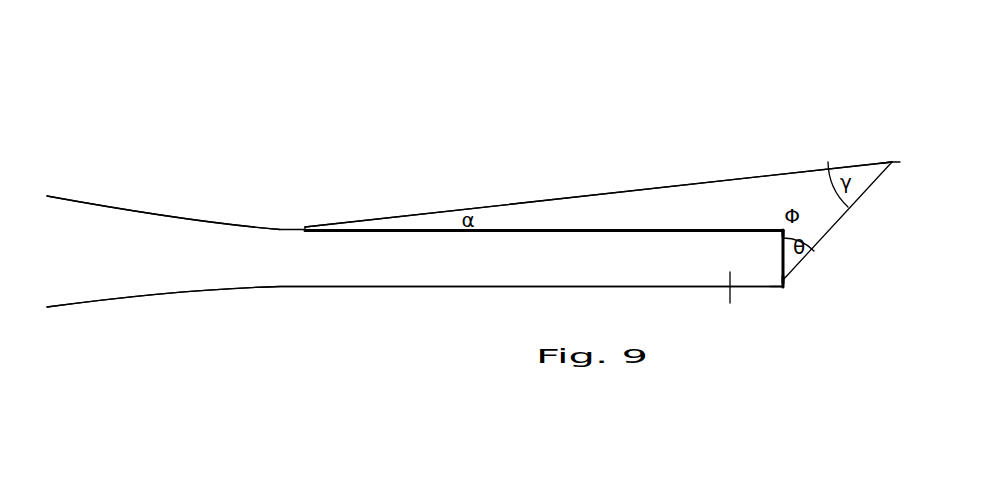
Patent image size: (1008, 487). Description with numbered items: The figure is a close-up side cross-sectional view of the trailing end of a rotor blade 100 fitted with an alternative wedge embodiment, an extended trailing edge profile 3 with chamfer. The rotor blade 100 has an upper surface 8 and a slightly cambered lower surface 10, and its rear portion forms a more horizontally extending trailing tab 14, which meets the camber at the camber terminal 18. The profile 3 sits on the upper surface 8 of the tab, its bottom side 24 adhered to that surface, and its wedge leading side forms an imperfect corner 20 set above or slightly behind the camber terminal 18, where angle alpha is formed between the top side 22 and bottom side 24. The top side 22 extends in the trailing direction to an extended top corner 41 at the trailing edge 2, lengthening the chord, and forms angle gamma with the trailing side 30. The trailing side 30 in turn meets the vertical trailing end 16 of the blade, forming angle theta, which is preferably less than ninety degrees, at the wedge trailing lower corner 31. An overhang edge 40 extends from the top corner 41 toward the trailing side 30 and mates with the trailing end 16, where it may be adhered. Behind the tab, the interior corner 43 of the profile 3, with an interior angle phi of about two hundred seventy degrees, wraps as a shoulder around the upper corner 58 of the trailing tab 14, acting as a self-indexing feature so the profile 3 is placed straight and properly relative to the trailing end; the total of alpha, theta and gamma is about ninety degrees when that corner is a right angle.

The trailing edge 2 is at (903, 152).
The profile 3 is at (598, 187).
The upper surface 8 is at (67, 198).
The lower surface 10 is at (158, 294).
The trailing tab 14 is at (734, 303).
The trailing end 16 is at (780, 285).
The camber terminal 18 is at (268, 235).
The corner 20 is at (307, 227).
The top side 22 is at (488, 228).
The bottom side 24 is at (502, 232).
The trailing side 30 is at (853, 205).
The wedge trailing lower corner 31 is at (787, 278).
The overhang edge 40 is at (828, 162).
The top corner 41 is at (889, 161).
The interior corner 43 is at (782, 228).
The upper corner 58 is at (780, 236).
The rotor blade 100 is at (396, 274).